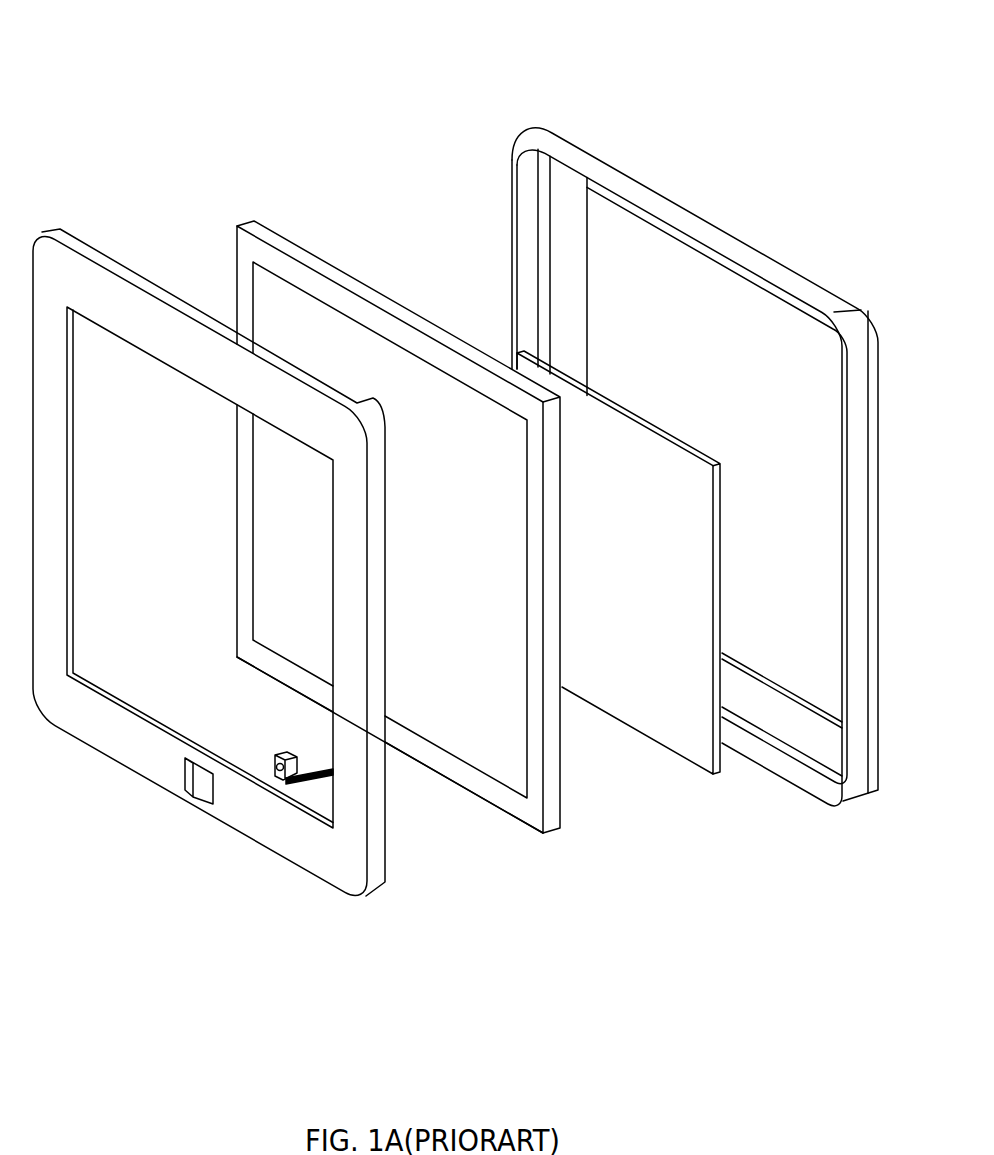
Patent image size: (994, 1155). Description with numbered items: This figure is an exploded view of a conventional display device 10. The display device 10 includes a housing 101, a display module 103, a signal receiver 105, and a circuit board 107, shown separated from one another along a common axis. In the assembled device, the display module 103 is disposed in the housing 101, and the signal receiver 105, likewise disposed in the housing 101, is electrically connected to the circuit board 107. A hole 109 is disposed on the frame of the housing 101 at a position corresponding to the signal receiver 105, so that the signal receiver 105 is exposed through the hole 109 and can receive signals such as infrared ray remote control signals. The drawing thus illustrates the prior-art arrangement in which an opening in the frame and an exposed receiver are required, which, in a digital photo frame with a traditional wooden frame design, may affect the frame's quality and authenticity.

The display device 10 is at (219, 35).
The housing 101 is at (73, 243).
The display module 103 is at (265, 233).
The signal receiver 105 is at (278, 767).
The circuit board 107 is at (658, 722).
The hole 109 is at (203, 780).